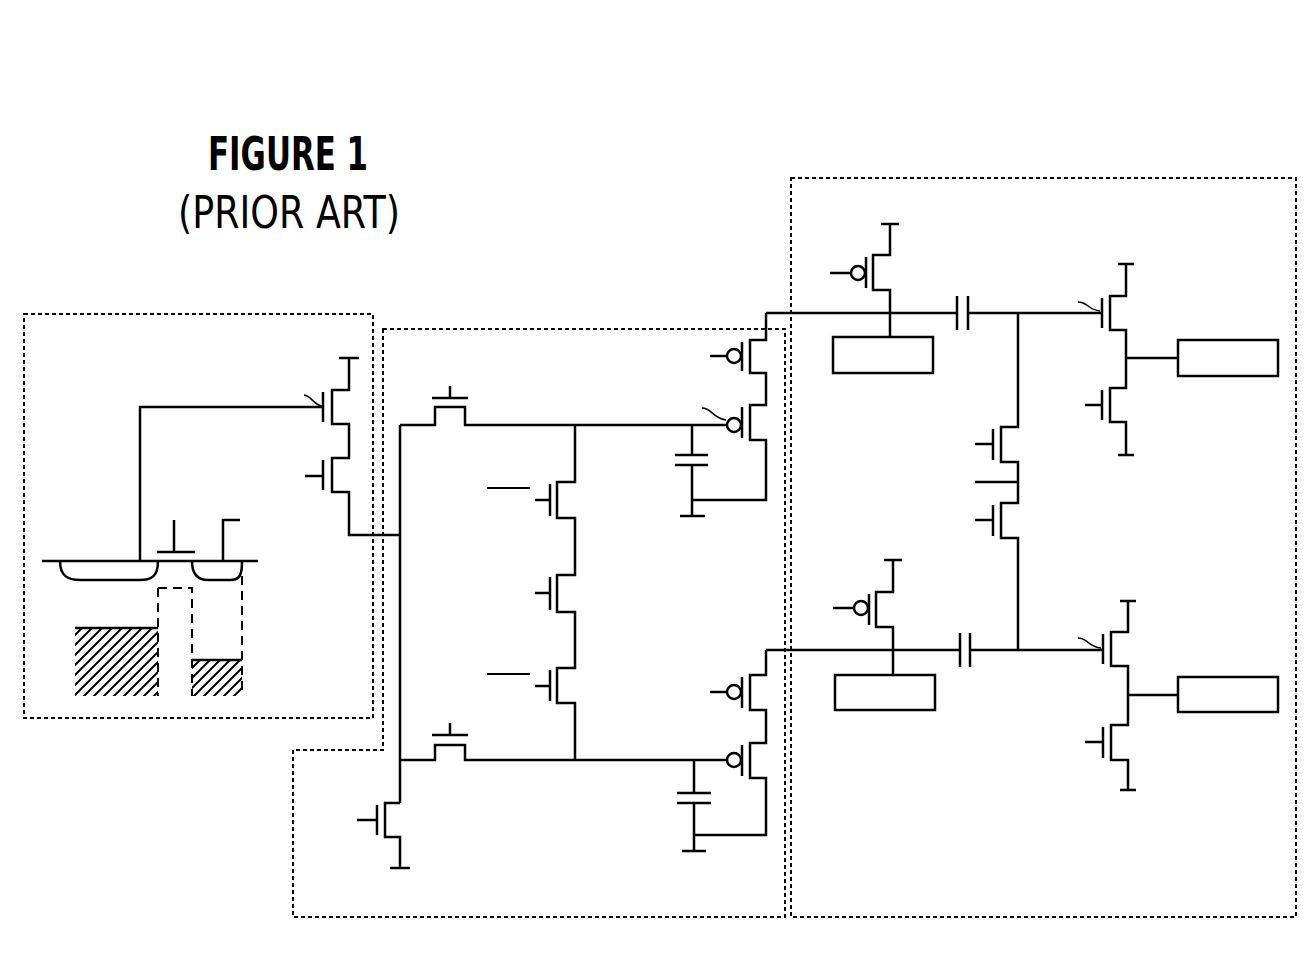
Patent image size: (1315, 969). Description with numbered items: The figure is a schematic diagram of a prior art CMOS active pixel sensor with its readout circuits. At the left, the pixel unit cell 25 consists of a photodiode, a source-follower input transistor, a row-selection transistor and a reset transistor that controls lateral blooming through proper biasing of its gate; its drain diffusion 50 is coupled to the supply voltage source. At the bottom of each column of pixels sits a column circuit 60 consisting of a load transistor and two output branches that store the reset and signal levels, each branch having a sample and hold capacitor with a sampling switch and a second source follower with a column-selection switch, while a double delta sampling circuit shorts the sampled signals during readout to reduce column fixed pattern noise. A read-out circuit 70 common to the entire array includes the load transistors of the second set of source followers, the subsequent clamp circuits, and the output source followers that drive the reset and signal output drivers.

The pixel unit cell 25 is at (318, 313).
The drain diffusion 50 is at (229, 560).
The column circuit 60 is at (622, 329).
The read-out circuit 70 is at (1097, 178).